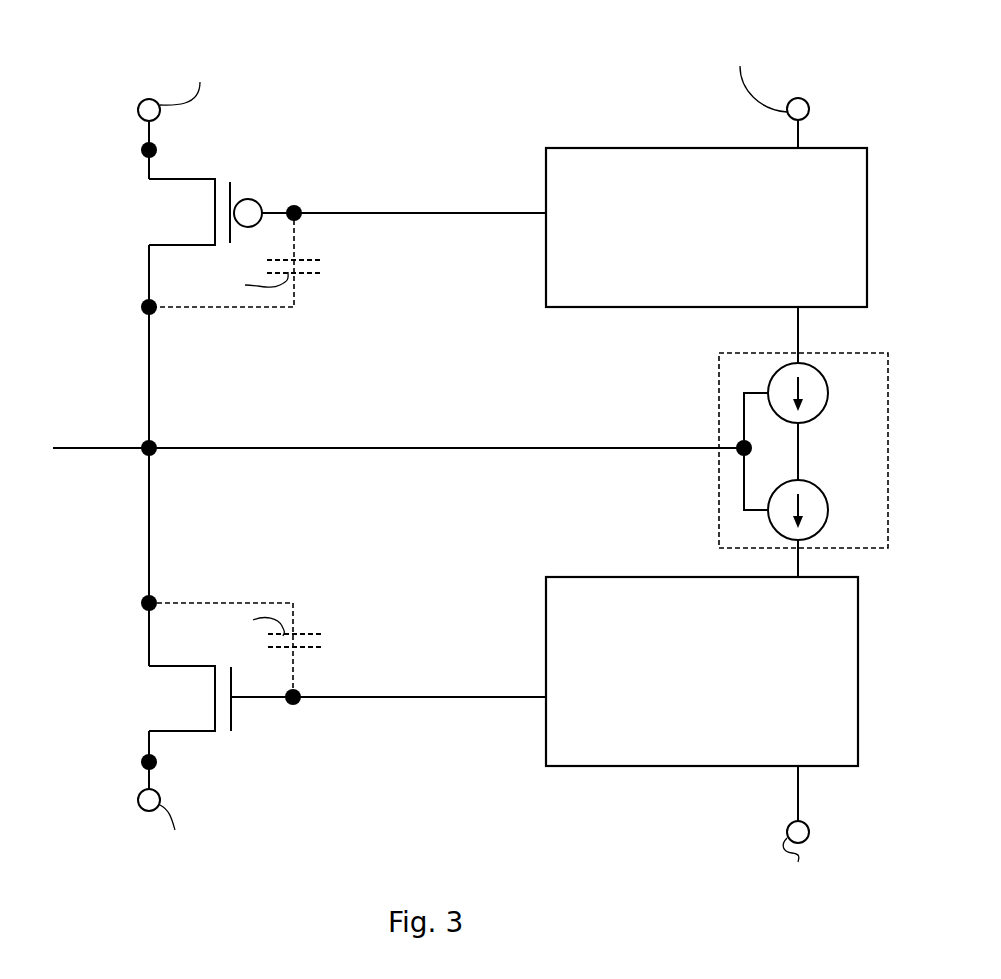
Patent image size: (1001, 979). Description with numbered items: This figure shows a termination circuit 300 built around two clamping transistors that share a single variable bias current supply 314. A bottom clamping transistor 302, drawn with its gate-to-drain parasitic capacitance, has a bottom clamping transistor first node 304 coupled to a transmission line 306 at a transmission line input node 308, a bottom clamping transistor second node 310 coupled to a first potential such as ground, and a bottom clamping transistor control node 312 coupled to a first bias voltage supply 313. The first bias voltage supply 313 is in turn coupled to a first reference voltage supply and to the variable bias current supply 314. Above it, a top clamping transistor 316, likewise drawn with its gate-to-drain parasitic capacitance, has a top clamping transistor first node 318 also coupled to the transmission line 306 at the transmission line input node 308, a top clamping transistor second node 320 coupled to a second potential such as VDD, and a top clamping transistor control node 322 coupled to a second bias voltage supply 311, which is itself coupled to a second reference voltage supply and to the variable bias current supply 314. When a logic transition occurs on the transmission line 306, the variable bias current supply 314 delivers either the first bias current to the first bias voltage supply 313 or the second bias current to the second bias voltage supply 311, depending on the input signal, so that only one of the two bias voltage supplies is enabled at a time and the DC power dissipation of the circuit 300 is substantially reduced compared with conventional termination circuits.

The termination circuit 300 is at (124, 881).
The bottom clamping transistor 302 is at (215, 700).
The bottom clamping transistor first node 304 is at (145, 604).
The transmission line 306 is at (95, 452).
The transmission line input node 308 is at (155, 445).
The bottom clamping transistor second node 310 is at (145, 763).
The second bias voltage supply 311 is at (706, 227).
The bottom clamping transistor control node 312 is at (295, 706).
The first bias voltage supply 313 is at (702, 671).
The variable bias current supply 314 is at (719, 476).
The top clamping transistor 316 is at (215, 202).
The top clamping transistor first node 318 is at (142, 307).
The top clamping transistor second node 320 is at (142, 150).
The top clamping transistor control node 322 is at (295, 207).